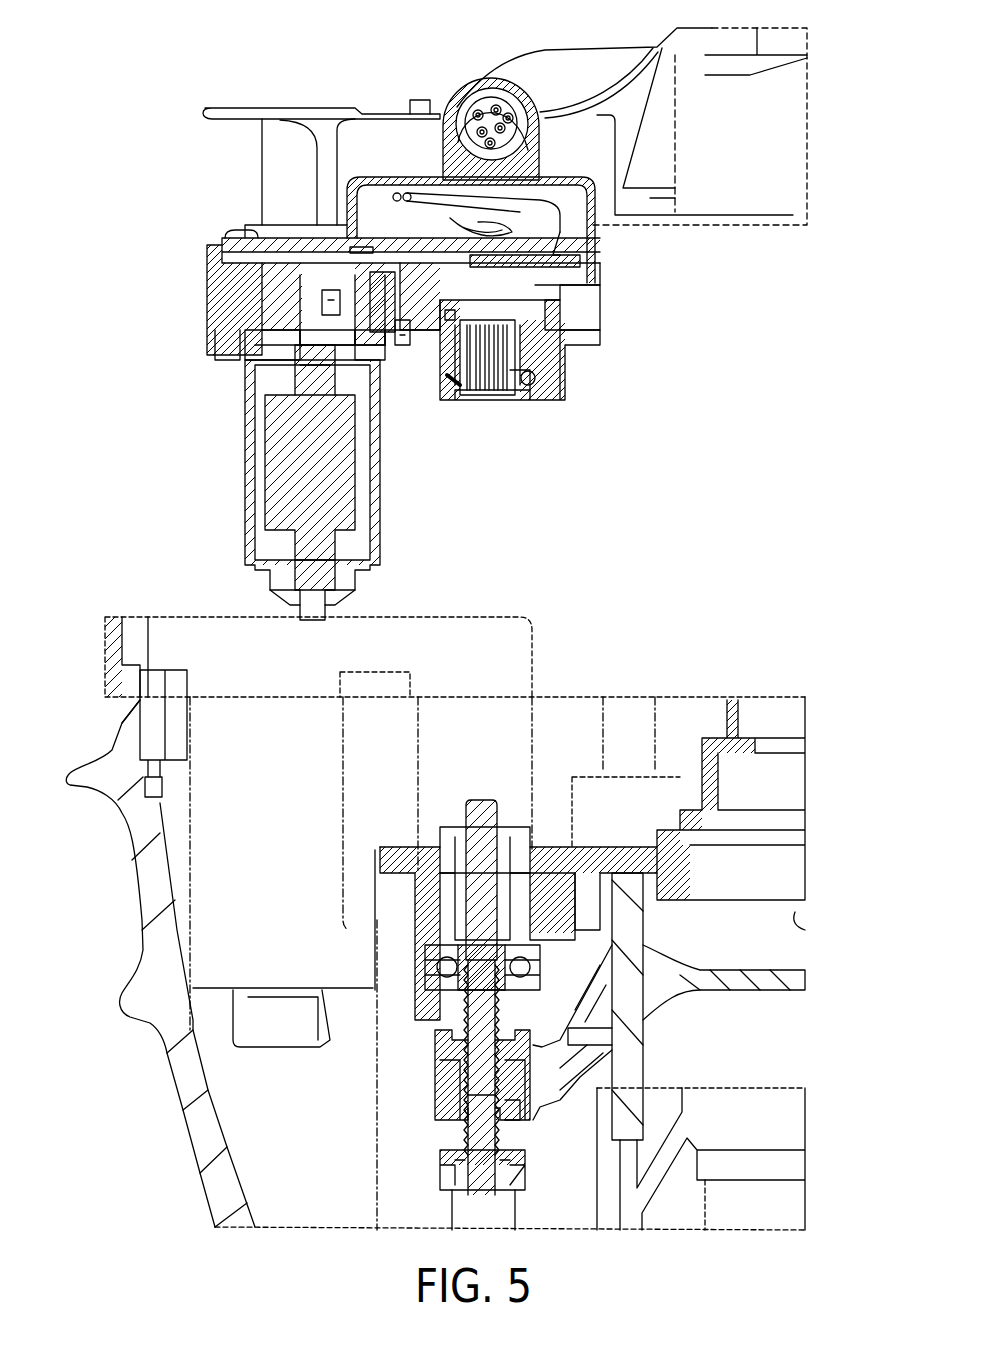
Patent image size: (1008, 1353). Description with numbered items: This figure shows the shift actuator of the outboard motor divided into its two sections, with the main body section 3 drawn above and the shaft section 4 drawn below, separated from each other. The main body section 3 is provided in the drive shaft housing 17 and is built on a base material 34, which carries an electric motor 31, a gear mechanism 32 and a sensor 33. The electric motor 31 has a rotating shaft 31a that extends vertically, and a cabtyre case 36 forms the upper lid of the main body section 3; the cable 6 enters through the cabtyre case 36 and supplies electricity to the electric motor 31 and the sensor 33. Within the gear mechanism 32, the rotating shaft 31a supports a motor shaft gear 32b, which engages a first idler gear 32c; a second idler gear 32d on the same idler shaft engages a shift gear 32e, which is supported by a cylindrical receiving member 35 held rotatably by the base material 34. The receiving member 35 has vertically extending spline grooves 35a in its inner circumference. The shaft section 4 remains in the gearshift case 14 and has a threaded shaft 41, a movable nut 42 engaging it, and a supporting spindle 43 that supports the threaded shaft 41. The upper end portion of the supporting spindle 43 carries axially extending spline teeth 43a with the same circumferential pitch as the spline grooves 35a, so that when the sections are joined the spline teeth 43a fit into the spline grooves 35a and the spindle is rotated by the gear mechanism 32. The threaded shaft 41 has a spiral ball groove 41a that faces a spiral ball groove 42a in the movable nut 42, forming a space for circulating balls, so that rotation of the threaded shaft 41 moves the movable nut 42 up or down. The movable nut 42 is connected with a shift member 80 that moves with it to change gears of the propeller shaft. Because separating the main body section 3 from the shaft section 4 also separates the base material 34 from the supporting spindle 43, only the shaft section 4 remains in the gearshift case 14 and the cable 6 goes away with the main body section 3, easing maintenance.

The main body section 3 is at (500, 452).
The shaft section 4 is at (466, 792).
The cable 6 is at (600, 48).
The gearshift case 14 is at (130, 880).
The drive shaft housing 17 is at (312, 108).
The electric motor 31 is at (245, 473).
The rotating shaft 31a is at (300, 342).
The gear mechanism 32 is at (415, 345).
The motor shaft gear 32b is at (330, 290).
The first idler gear 32c is at (362, 272).
The second idler gear 32d is at (403, 350).
The shift gear 32e is at (565, 312).
The sensor 33 is at (515, 235).
The base material 34 is at (228, 290).
The cylindrical receiving member 35 is at (560, 322).
The spline grooves 35a is at (500, 380).
The cabtyre case 36 is at (288, 225).
The threaded shaft 41 is at (500, 1142).
The ball groove 41a is at (512, 1132).
The movable nut 42 is at (440, 1080).
The ball groove 42a is at (470, 1103).
The supporting spindle 43 is at (505, 920).
The spline teeth 43a is at (500, 820).
The shift member 80 is at (770, 977).